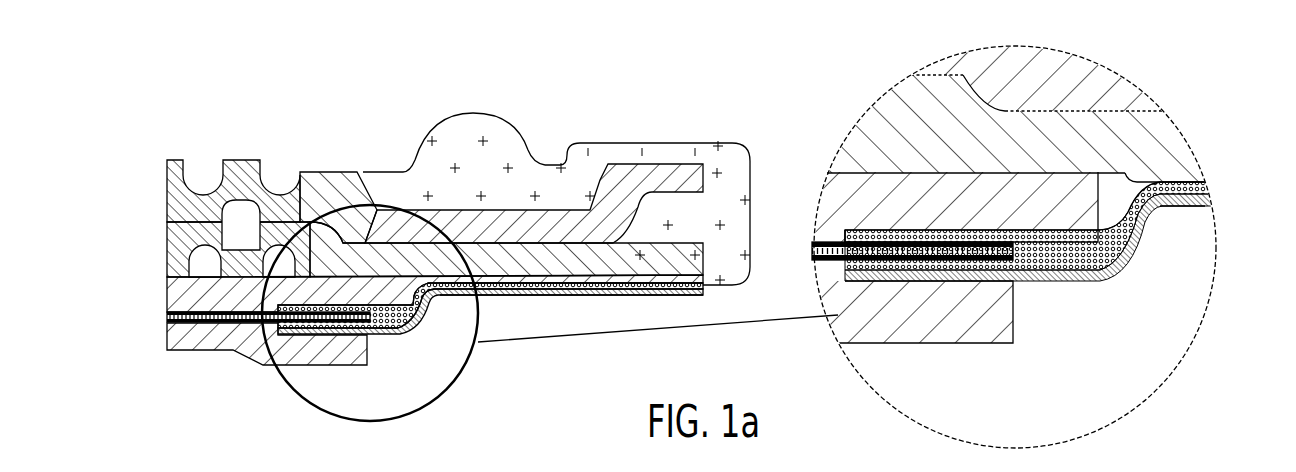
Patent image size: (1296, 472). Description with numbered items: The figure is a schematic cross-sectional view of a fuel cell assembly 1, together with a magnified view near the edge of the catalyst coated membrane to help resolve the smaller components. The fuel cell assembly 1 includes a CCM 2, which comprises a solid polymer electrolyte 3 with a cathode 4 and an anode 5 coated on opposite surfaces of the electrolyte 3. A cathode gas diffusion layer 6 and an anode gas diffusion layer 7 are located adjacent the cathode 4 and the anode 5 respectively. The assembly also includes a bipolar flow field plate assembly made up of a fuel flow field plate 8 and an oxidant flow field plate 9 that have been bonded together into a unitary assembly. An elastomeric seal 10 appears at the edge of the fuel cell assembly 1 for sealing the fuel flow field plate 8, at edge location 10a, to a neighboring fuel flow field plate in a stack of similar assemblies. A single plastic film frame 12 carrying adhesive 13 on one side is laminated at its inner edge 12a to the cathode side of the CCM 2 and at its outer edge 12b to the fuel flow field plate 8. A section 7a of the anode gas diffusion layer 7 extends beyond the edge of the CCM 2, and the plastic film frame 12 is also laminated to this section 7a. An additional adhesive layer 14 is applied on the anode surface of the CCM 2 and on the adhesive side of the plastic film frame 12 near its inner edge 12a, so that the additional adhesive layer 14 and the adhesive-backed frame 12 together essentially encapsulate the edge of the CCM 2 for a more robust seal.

The fuel cell assembly 1 is at (656, 85).
The CCM 2 is at (150, 324).
The solid polymer electrolyte 3 is at (826, 242).
The cathode 4 is at (836, 262).
The anode 5 is at (840, 240).
The cathode gas diffusion layer 6 is at (232, 352).
The anode gas diffusion layer 7 is at (180, 292).
The section of anode gas diffusion layer 7a is at (1060, 190).
The fuel flow field plate 8 is at (190, 242).
The oxidant flow field plate 9 is at (243, 166).
The elastomeric seal 10 is at (530, 168).
The edge location 10a is at (495, 100).
The plastic film frame 12 is at (415, 320).
The inner edge 12a is at (343, 345).
The outer edge 12b is at (577, 305).
The adhesive 13 is at (1115, 232).
The additional adhesive layer 14 is at (950, 236).